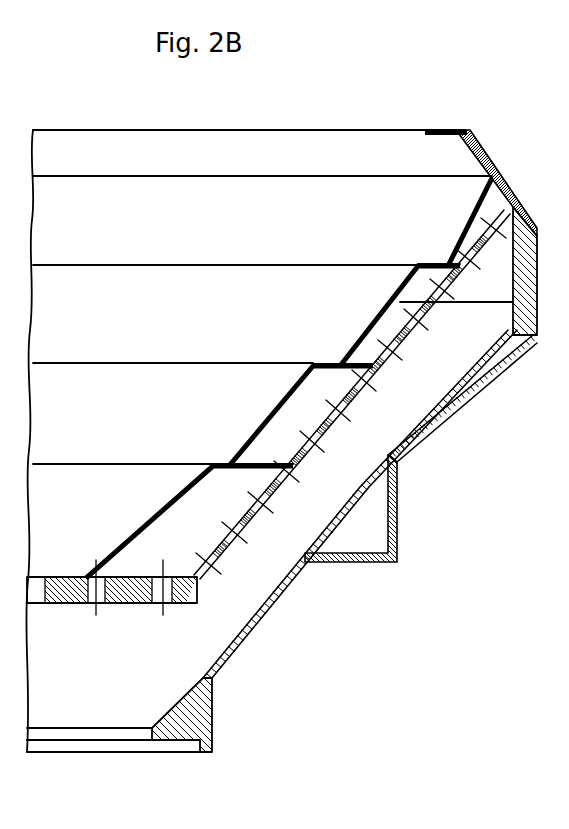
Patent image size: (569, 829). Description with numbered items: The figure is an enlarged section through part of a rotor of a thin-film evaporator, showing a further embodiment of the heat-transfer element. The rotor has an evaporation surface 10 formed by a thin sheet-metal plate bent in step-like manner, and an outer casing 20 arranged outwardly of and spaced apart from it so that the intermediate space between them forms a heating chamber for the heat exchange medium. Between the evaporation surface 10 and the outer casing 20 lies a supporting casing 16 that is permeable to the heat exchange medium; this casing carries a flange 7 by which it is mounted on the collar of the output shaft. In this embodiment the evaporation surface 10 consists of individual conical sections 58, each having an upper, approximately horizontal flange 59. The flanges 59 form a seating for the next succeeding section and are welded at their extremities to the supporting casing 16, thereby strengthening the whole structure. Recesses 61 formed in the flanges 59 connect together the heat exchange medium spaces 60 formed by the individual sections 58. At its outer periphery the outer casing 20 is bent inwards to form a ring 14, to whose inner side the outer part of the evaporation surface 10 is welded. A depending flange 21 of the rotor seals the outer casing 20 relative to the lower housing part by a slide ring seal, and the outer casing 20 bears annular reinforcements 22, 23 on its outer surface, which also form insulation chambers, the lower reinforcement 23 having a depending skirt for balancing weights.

The flange 7 is at (70, 605).
The evaporation surface 10 is at (118, 518).
The ring 14 is at (523, 340).
The supporting casing 16 is at (267, 513).
The outer casing 20 is at (273, 600).
The depending flange 21 is at (214, 718).
The annular reinforcement 22 is at (448, 413).
The lower reinforcement 23 is at (402, 527).
The conical section 58 is at (152, 517).
The flange 59 is at (433, 266).
The heat exchange medium space 60 is at (478, 223).
The recess 61 is at (452, 255).